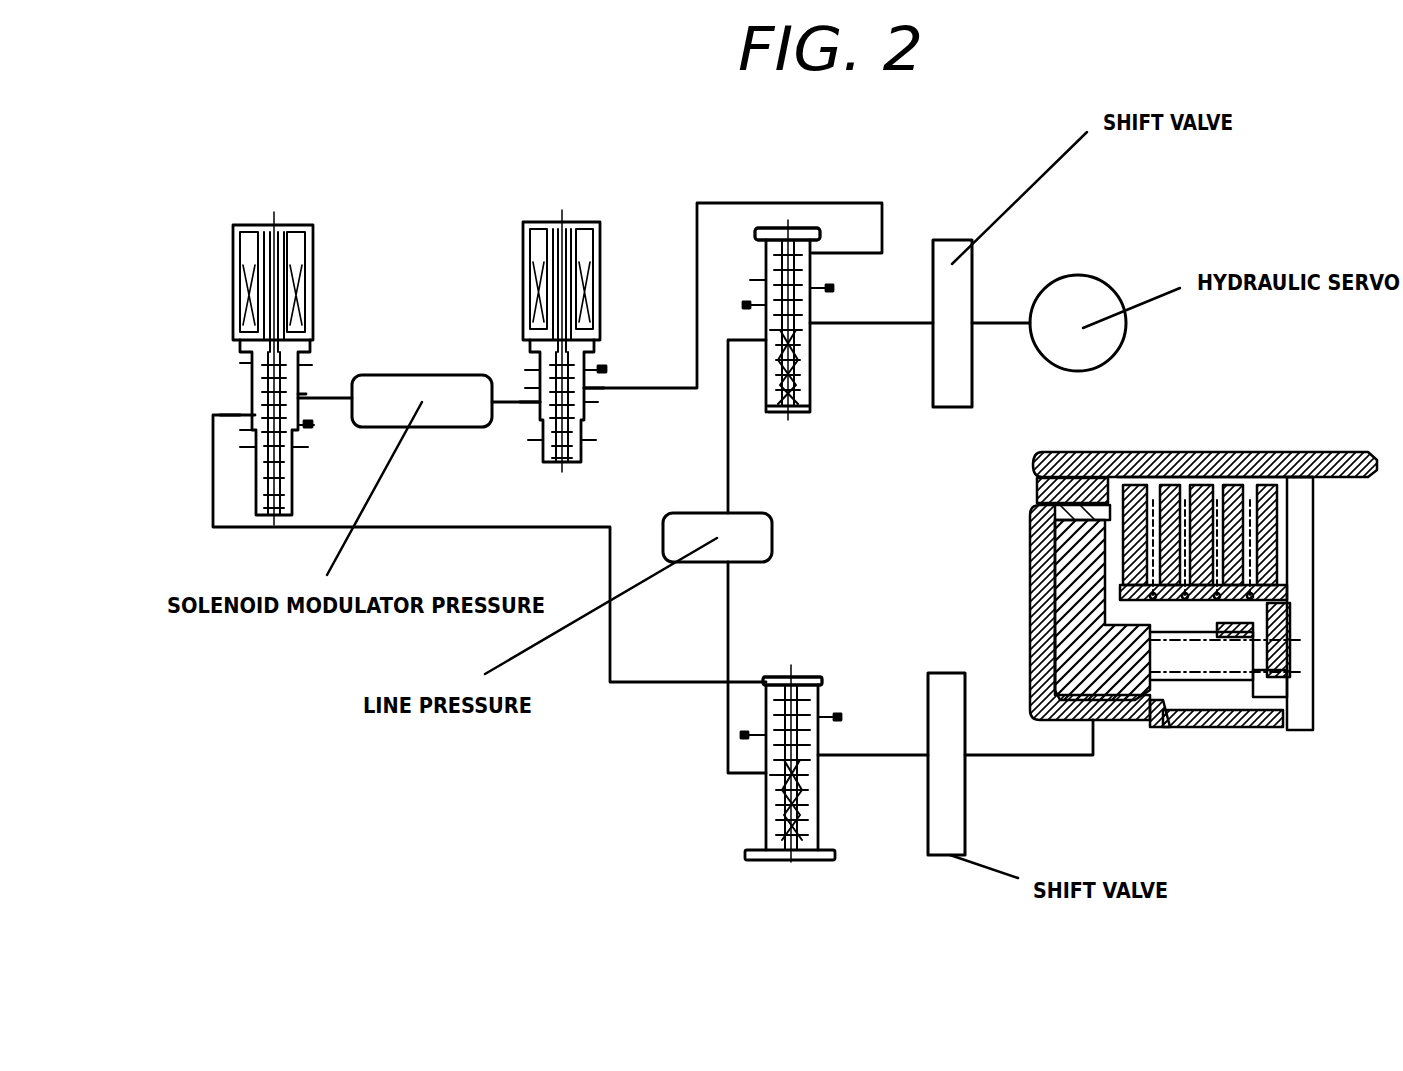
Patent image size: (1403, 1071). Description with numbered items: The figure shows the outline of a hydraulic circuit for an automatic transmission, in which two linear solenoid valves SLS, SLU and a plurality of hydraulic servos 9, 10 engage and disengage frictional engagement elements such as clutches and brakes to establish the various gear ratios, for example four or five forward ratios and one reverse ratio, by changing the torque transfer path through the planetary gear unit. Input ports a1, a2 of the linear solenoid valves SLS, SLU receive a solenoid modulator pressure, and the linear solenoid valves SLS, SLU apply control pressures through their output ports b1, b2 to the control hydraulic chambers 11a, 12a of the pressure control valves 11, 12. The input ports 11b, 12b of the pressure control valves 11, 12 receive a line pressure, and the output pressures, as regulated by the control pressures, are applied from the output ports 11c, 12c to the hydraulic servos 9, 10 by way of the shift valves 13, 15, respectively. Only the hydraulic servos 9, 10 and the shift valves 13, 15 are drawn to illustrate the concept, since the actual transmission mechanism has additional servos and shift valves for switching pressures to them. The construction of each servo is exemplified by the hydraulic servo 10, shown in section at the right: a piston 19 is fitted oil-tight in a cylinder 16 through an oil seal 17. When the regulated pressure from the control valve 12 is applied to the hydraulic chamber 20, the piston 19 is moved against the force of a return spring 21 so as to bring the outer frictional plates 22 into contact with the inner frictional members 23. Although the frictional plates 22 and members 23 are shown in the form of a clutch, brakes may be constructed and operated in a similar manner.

The hydraulic servo 9 is at (1090, 276).
The hydraulic servo 10 is at (1065, 450).
The pressure control valve 11 is at (775, 228).
The control hydraulic chamber 11a is at (815, 250).
The input port 11b is at (765, 342).
The output port 11c is at (814, 335).
The pressure control valve 12 is at (808, 677).
The control hydraulic chamber 12a is at (777, 677).
The input port 12b is at (765, 780).
The output port 12c is at (823, 770).
The shift valve 13 is at (955, 240).
The shift valve 15 is at (931, 673).
The cylinder 16 is at (1035, 522).
The oil seal 17 is at (1085, 470).
The piston 19 is at (1065, 585).
The hydraulic chamber 20 is at (1040, 650).
The return spring 21 is at (1200, 722).
The outer frictional plates 22 is at (1232, 470).
The inner frictional members 23 is at (1185, 470).
The linear solenoid valve SLS is at (272, 205).
The linear solenoid valve SLU is at (563, 205).
The input port a1 is at (300, 396).
The output port b1 is at (226, 414).
The input port a2 is at (535, 398).
The output port b2 is at (596, 386).